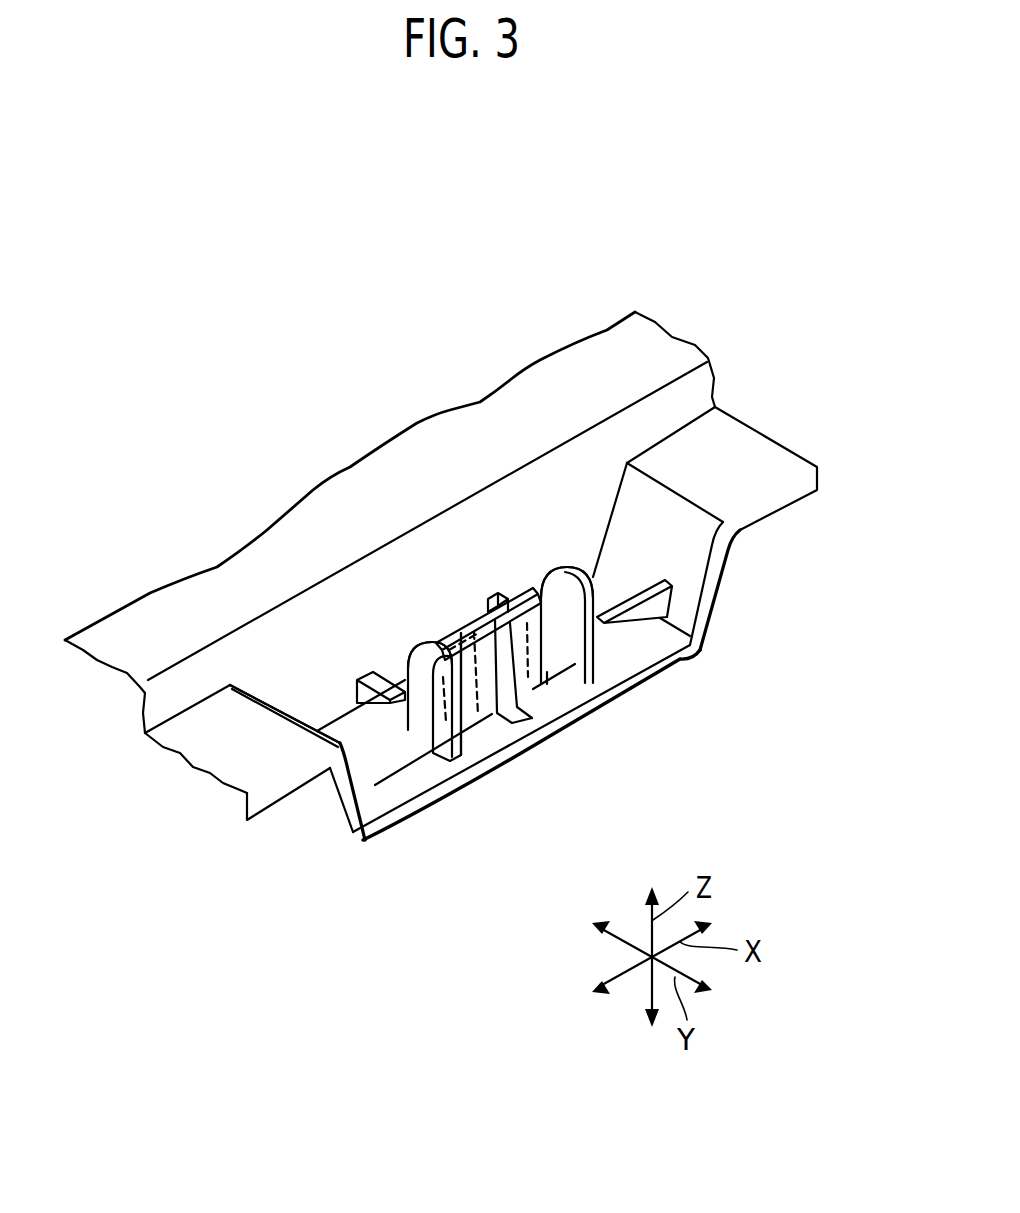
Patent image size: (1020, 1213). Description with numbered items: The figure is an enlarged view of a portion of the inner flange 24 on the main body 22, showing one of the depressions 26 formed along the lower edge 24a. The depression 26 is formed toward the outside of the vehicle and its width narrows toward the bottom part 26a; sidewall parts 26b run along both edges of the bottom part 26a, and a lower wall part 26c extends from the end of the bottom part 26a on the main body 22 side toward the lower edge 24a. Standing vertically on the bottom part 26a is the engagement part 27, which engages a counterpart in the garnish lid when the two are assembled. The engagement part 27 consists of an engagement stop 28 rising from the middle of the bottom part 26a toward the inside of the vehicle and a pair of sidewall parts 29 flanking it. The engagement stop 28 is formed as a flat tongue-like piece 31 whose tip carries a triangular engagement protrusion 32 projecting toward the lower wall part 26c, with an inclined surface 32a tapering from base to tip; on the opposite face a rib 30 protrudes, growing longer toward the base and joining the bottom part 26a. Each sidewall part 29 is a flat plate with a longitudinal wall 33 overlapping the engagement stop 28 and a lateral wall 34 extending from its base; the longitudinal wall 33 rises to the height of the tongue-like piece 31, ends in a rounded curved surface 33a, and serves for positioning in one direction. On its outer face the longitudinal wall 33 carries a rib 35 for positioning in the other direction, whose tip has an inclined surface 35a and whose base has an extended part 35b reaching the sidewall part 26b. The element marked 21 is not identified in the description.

The plate 21 is at (696, 393).
The main body 22 is at (486, 540).
The inner flange 24 is at (767, 460).
The lower edge 24a is at (787, 467).
The depression 26 is at (474, 566).
The bottom part 26a is at (663, 661).
The sidewall parts 26b is at (683, 548).
The lower wall part 26c is at (583, 532).
The engagement part 27 is at (433, 524).
The engagement stop 28 is at (480, 617).
The sidewall parts 29 is at (570, 650).
The rib 30 is at (518, 702).
The tongue-like piece 31 is at (472, 712).
The engagement protrusion 32 is at (478, 715).
The inclined surface 32a is at (421, 645).
The longitudinal wall 33 is at (565, 553).
The rounded curved surface 33a is at (567, 573).
The lateral wall 34 is at (383, 698).
The rib 35 is at (303, 676).
The inclined surface 35a is at (403, 653).
The extended part 35b is at (363, 750).